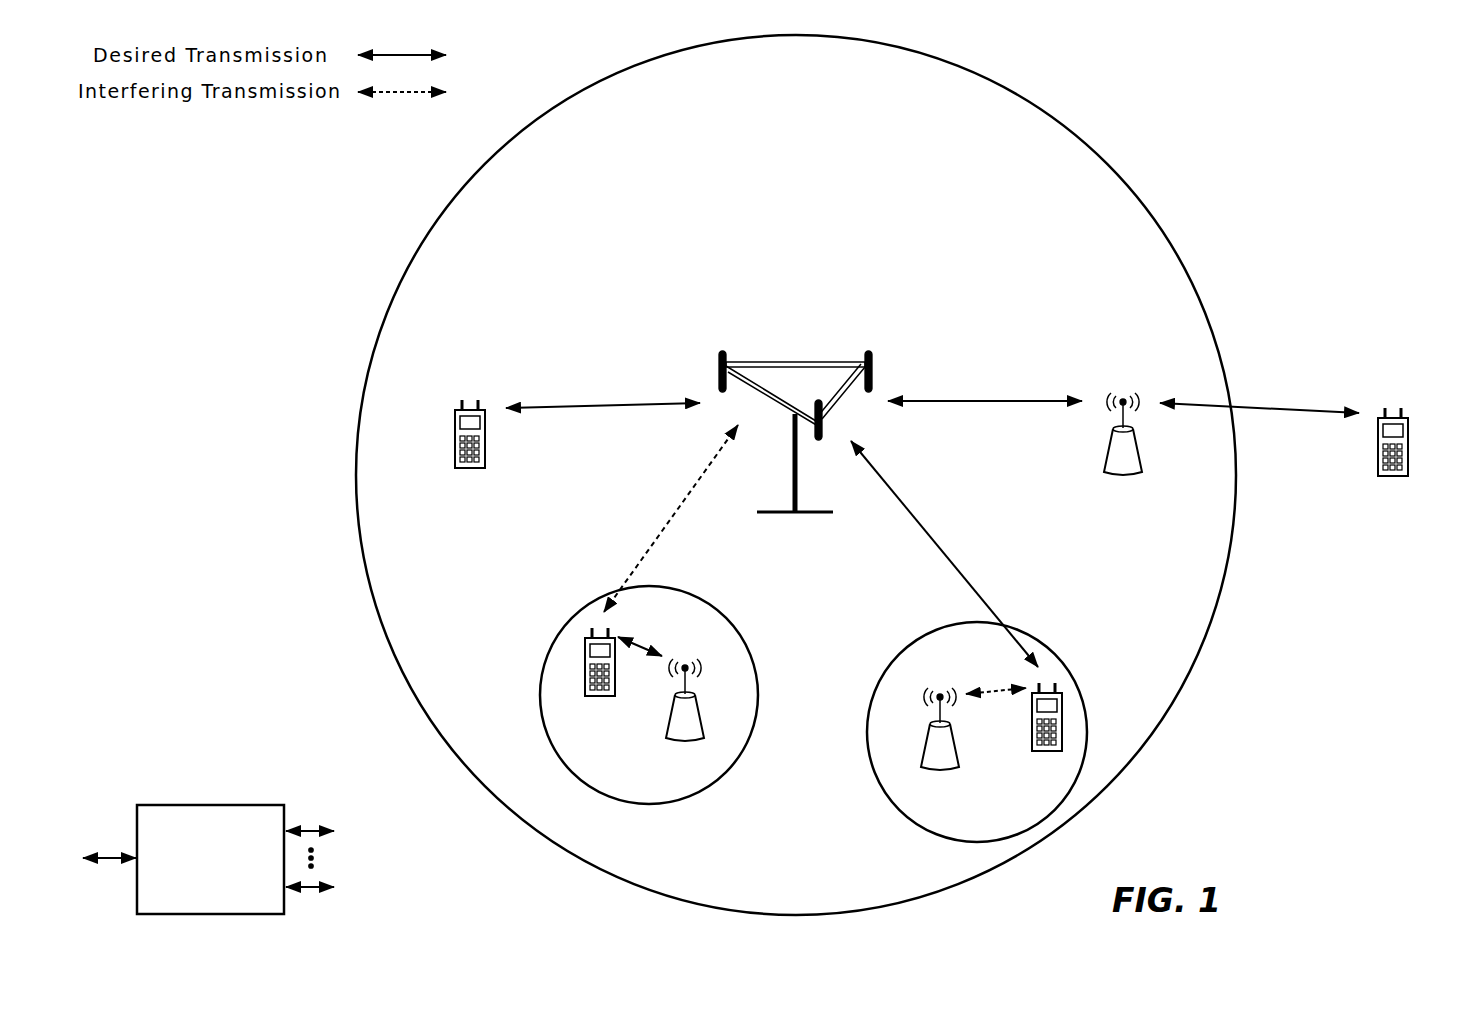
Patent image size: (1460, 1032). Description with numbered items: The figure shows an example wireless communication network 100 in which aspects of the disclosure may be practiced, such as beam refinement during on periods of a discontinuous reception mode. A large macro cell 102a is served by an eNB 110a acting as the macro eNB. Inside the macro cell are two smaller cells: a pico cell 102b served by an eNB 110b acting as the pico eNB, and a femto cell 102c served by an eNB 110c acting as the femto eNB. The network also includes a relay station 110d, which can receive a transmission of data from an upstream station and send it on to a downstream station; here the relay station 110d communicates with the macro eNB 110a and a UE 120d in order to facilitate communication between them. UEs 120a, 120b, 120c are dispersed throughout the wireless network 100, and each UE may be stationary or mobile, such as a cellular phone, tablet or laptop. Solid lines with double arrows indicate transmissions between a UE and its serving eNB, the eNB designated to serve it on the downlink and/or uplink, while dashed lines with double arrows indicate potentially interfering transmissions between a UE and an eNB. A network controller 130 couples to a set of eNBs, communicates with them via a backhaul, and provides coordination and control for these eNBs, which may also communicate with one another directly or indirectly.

The wireless communication network 100 is at (1314, 101).
The macro cell 102a is at (1087, 147).
The pico cell 102b is at (733, 624).
The femto cell 102c is at (894, 657).
The macro eNB 110a is at (792, 364).
The pico eNB 110b is at (703, 726).
The femto eNB 110c is at (921, 751).
The relay station 110d is at (1123, 399).
The UE 120a is at (455, 422).
The UE 120b is at (587, 688).
The UE 120c is at (1033, 743).
The UE 120d is at (1408, 430).
The network controller 130 is at (207, 804).